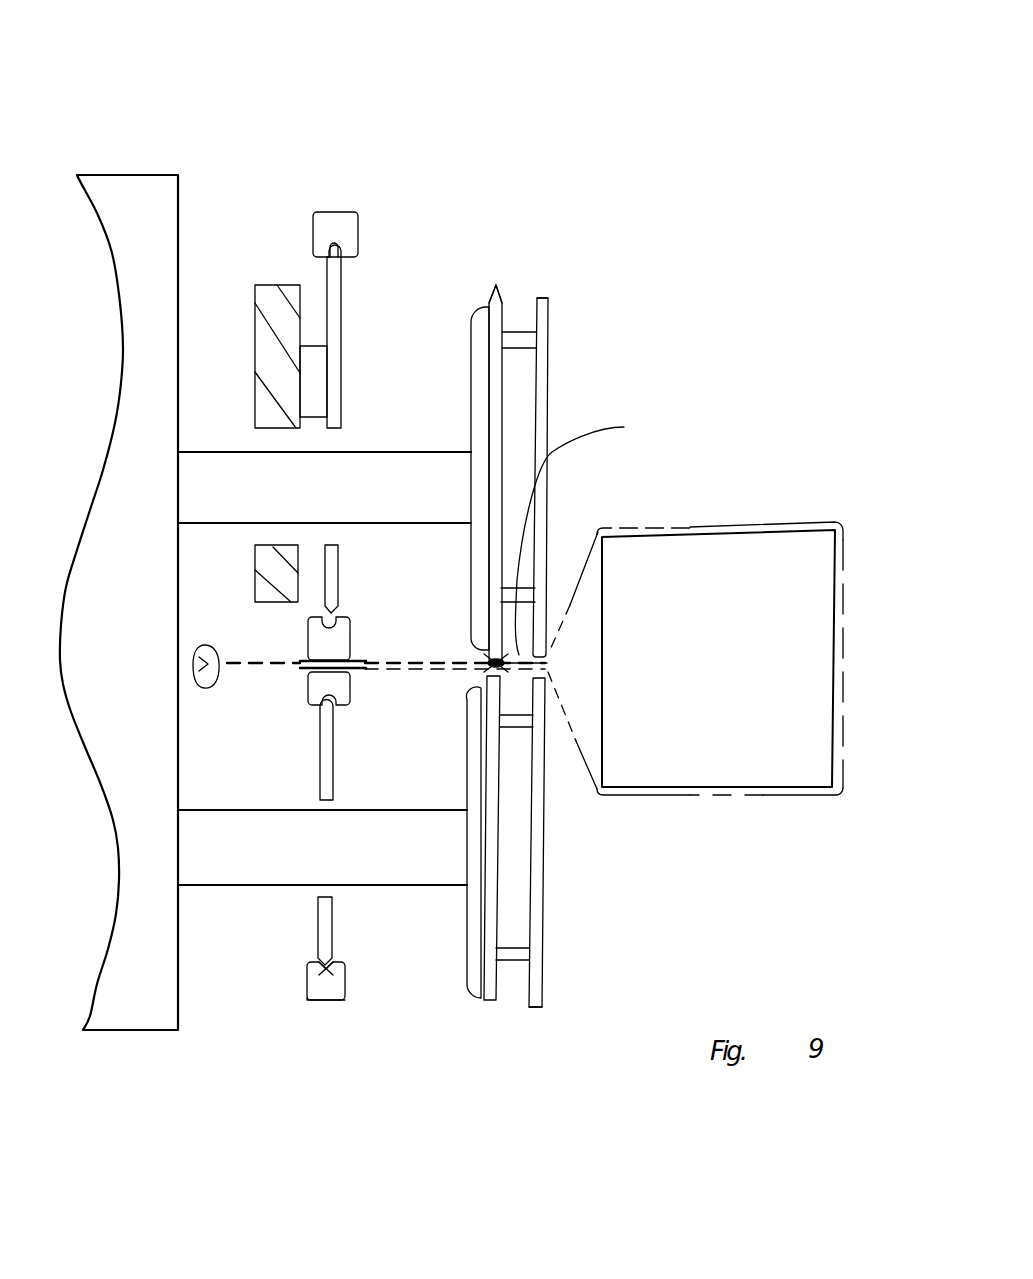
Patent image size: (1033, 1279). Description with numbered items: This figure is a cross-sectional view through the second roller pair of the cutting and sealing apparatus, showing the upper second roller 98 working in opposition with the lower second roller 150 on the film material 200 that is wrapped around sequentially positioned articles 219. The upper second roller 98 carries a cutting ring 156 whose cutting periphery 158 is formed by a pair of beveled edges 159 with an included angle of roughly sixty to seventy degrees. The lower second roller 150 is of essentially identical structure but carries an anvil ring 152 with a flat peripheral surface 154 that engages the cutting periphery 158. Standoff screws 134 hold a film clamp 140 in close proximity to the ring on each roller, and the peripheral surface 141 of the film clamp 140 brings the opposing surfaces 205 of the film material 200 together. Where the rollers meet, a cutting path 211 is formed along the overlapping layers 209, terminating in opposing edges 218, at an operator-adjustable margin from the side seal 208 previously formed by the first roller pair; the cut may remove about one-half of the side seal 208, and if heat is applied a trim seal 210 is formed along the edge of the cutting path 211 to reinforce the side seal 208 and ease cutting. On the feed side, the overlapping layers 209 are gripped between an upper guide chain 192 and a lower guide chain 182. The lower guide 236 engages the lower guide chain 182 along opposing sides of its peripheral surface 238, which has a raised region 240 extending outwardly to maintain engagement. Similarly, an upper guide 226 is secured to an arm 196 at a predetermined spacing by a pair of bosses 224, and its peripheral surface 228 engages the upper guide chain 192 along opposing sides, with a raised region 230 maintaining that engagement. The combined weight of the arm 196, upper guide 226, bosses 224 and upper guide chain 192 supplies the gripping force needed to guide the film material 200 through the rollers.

The upper second roller 98 is at (713, 362).
The standoff screws 134 is at (526, 331).
The lower film clamp 140 is at (548, 370).
The peripheral surface 141 is at (548, 297).
The lower second roller 150 is at (634, 897).
The anvil ring 152 is at (474, 986).
The flat peripheral surface 154 is at (490, 1000).
The cutting ring 156 is at (484, 352).
The cutting periphery 158 is at (490, 296).
The beveled edges 159 is at (492, 299).
The lower guide chain 182 is at (316, 1000).
The upper guide chain 192 is at (324, 213).
The arm 196 is at (266, 285).
The film material 200 is at (733, 514).
The opposing surfaces 205 is at (565, 614).
The side seal 208 is at (591, 532).
The overlapping layers 209 is at (213, 692).
The trim seal 210 is at (490, 668).
The cutting path 211 is at (491, 668).
The opposing edges 218 is at (197, 688).
The articles 219 is at (785, 558).
The bosses 224 is at (345, 292).
The upper guide 226 is at (343, 300).
The peripheral surface 228 is at (310, 343).
The raised region 230 is at (340, 245).
The lower guide 236 is at (337, 763).
The peripheral surface 238 is at (327, 963).
The raised region 240 is at (323, 963).